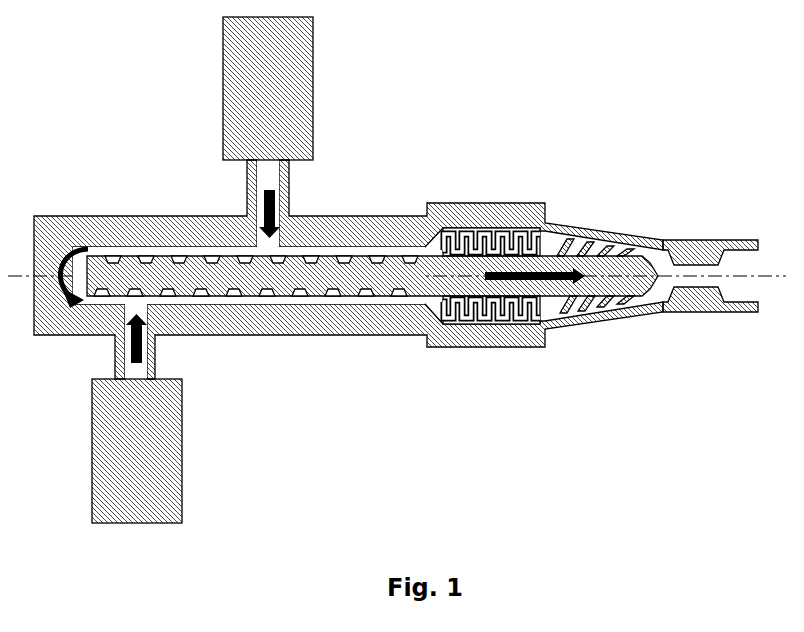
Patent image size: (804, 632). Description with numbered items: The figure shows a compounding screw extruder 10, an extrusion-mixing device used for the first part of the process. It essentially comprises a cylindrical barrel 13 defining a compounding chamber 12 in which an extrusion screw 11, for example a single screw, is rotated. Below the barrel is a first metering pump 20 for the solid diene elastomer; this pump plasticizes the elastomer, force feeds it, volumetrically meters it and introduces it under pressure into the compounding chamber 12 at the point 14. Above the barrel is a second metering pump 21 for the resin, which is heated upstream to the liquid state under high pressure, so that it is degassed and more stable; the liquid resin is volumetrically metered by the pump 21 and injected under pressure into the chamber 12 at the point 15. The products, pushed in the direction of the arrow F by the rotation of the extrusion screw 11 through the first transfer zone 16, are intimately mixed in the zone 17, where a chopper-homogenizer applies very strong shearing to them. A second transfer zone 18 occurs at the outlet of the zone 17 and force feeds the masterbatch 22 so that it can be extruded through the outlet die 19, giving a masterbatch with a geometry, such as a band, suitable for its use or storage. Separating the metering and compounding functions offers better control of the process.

The compounding screw extruder 10 is at (541, 113).
The extrusion screw 11 is at (245, 272).
The compounding chamber 12 is at (160, 243).
The cylindrical barrel 13 is at (368, 232).
The point of introduction of the elastomer 14 is at (137, 313).
The point of introduction of the resin 15 is at (267, 238).
The first transfer zone 16 is at (282, 300).
The mixing zone 17 is at (480, 324).
The second transfer zone 18 is at (613, 312).
The outlet die 19 is at (749, 240).
The first metering pump 20 is at (135, 442).
The second metering pump 21 is at (265, 66).
The masterbatch 22 is at (702, 282).
The direction of flow arrow F is at (532, 324).